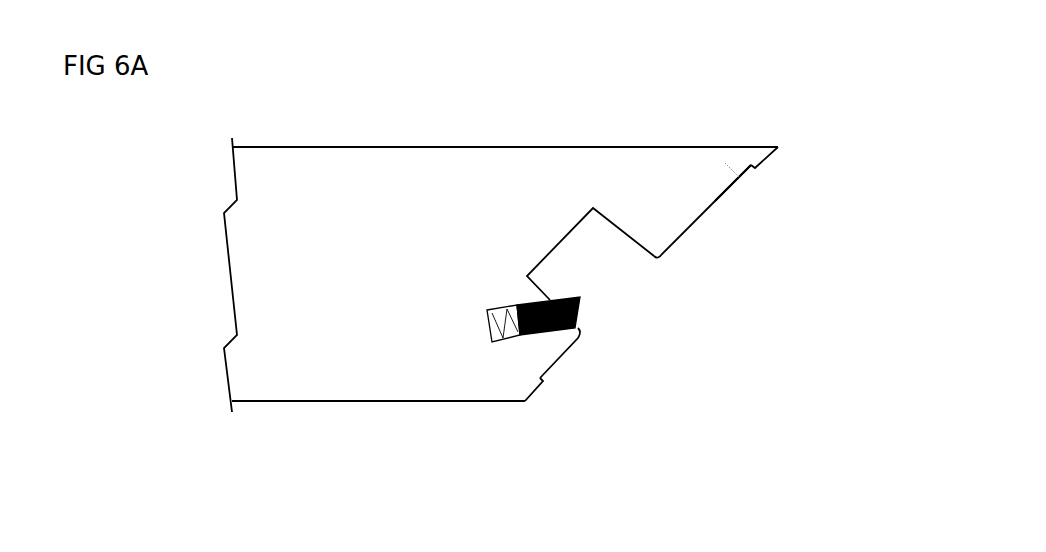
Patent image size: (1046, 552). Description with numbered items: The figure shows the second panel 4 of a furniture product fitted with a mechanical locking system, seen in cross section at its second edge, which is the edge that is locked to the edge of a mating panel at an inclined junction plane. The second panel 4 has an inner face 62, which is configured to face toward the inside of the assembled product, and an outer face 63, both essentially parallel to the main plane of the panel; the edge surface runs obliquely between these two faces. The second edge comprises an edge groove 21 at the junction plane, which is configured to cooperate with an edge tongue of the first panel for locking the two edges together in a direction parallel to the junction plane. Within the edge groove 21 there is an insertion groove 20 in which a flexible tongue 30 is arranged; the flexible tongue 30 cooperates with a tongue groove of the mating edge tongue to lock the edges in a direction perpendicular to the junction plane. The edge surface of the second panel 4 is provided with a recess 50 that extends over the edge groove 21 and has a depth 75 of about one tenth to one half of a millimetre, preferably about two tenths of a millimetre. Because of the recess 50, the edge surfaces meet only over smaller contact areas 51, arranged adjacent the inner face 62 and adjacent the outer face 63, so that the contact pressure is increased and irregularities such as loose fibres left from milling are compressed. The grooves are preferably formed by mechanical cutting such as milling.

The second panel 4 is at (335, 392).
The insertion groove 20 is at (487, 312).
The edge groove 21 is at (582, 273).
The flexible tongue 30 is at (517, 303).
The recess 50 is at (710, 208).
The contact areas 51 is at (773, 157).
The inner face 62 is at (462, 402).
The outer face 63 is at (730, 147).
The depth 75 is at (743, 183).